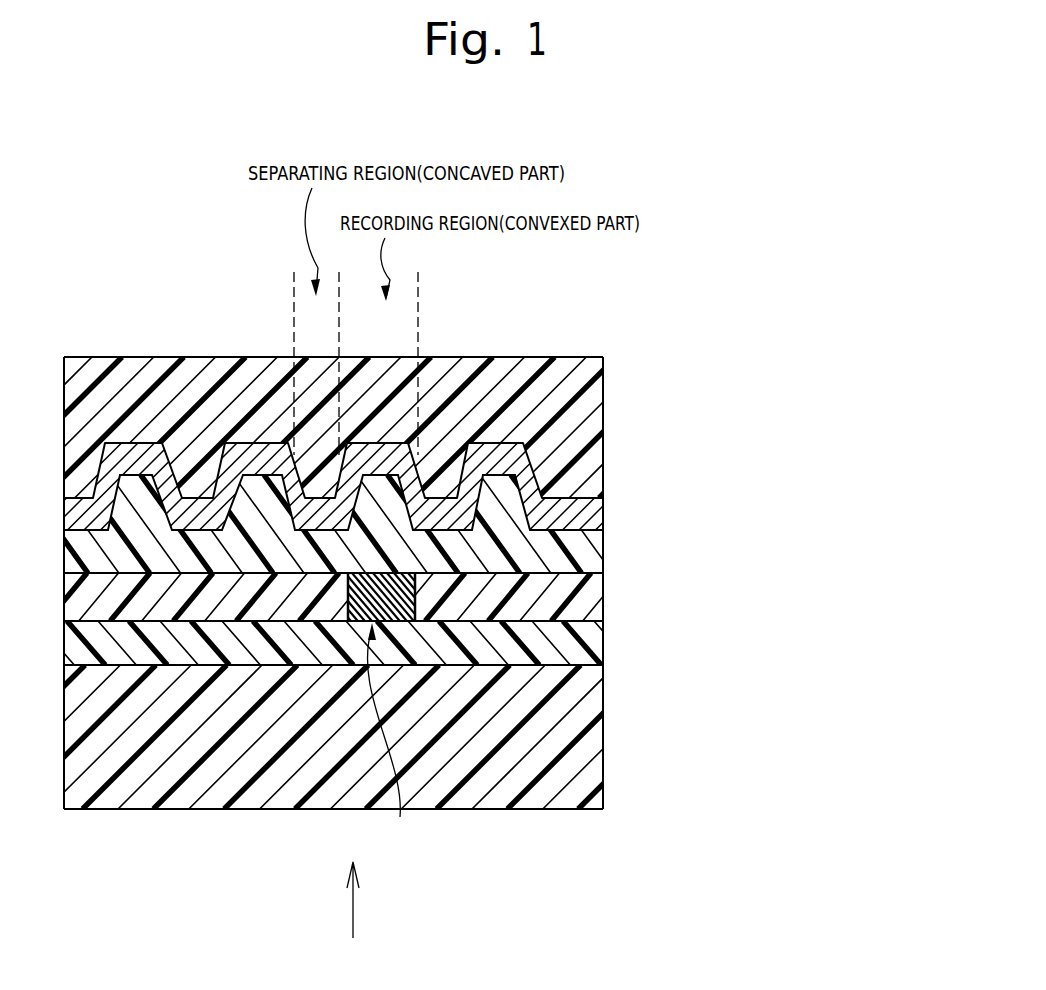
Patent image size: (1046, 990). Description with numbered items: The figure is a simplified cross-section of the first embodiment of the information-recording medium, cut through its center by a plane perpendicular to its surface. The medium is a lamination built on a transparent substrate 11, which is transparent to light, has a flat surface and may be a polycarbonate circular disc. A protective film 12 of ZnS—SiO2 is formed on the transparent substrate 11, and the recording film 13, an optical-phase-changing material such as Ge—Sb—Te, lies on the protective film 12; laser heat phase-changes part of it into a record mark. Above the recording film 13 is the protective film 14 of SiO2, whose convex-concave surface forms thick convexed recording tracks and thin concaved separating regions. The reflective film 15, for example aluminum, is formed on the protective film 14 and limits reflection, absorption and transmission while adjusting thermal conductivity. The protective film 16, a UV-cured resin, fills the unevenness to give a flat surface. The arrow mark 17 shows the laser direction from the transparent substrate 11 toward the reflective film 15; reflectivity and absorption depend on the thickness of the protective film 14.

The transparent substrate 11 is at (603, 742).
The protective film 12 is at (603, 643).
The recording film 13 is at (603, 598).
The protective film 14 is at (603, 553).
The reflective film 15 is at (603, 506).
The protective film 16 is at (603, 421).
The arrow mark 17 is at (353, 918).